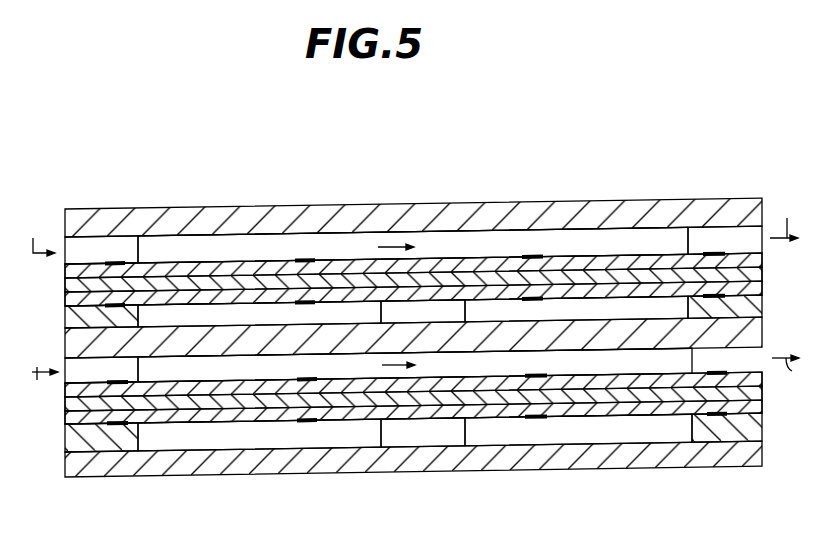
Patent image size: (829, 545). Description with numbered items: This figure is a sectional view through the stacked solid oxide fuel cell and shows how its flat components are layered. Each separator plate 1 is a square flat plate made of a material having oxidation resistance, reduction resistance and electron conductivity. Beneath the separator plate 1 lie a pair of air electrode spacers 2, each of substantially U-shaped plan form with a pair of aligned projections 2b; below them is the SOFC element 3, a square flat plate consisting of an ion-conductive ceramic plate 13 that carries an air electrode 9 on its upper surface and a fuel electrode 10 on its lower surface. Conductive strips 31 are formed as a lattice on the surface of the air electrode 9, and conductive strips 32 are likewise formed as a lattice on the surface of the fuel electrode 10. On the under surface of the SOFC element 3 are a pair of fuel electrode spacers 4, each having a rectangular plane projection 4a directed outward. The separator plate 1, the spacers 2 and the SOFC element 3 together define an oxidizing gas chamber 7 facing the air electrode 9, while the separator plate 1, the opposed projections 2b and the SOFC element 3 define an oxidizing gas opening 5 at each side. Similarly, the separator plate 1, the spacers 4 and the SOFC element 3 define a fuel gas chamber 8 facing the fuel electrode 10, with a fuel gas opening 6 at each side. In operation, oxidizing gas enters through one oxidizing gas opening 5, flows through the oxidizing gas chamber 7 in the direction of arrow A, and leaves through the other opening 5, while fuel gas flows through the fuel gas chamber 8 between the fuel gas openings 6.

The separator plate 1 is at (450, 212).
The air electrode spacer 2 is at (173, 248).
The projection 2b is at (117, 250).
The SOFC element 3 is at (57, 264).
The fuel electrode spacer 4 is at (203, 313).
The projection 4a is at (68, 321).
The oxidizing gas opening 5 is at (80, 238).
The fuel gas opening 6 is at (462, 300).
The oxidizing gas chamber 7 is at (312, 232).
The fuel gas chamber 8 is at (340, 300).
The air electrode 9 is at (762, 258).
The fuel electrode 10 is at (762, 292).
The ion-conductive ceramic plate 13 is at (762, 277).
The conductive strip 31 is at (298, 258).
The conductive strip 32 is at (122, 427).
The arrow A is at (394, 246).